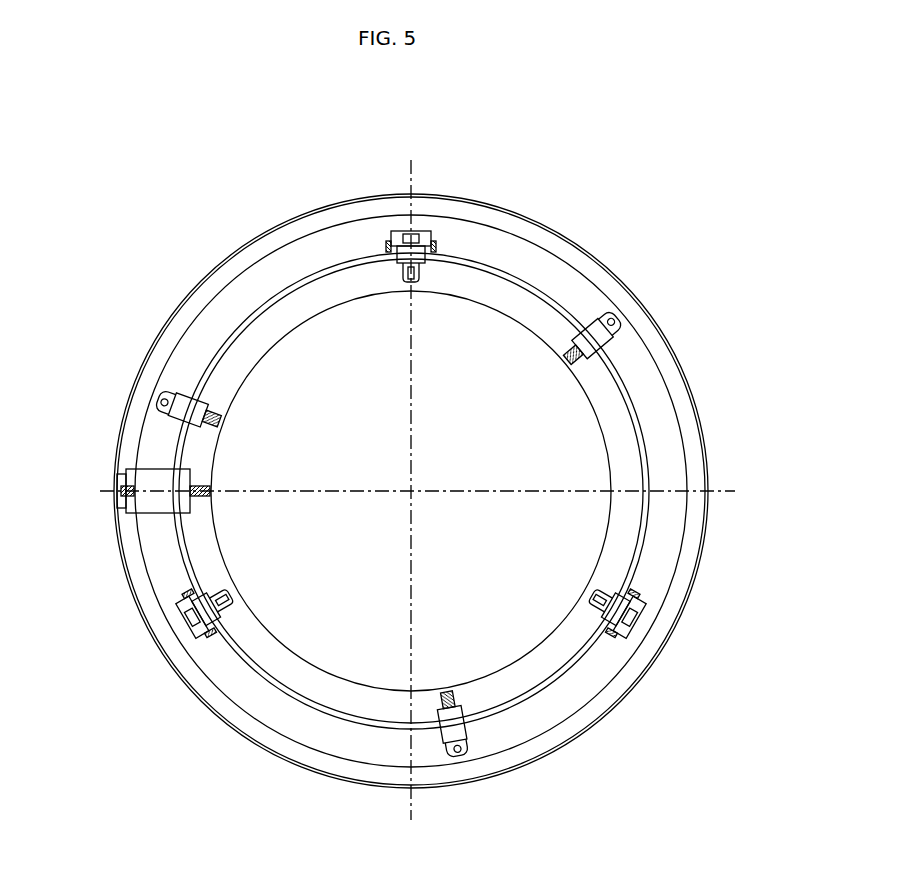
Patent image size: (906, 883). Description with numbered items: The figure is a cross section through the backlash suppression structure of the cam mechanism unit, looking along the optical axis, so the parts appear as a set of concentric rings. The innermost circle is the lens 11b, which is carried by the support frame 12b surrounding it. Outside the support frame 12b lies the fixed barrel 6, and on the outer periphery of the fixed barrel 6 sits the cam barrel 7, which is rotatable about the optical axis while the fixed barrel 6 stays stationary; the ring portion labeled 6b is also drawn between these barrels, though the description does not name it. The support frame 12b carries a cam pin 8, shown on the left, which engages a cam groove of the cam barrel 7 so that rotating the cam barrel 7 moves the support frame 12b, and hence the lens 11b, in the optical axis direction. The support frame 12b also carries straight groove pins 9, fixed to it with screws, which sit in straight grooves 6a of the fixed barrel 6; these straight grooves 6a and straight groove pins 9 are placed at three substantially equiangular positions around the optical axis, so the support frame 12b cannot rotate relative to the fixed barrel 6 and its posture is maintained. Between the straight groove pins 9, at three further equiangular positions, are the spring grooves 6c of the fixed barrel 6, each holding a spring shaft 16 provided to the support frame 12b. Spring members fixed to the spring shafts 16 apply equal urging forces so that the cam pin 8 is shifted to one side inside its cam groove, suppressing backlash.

The fixed barrel 6 is at (534, 258).
The straight groove 6a is at (420, 232).
The outer ring part 6b is at (670, 431).
The spring groove 6c is at (625, 326).
The cam barrel 7 is at (597, 720).
The cam pin 8 is at (149, 480).
The straight groove pin 9 is at (406, 242).
The lens 11b is at (268, 543).
The support frame 12b is at (207, 567).
The spring shaft 16 is at (597, 336).